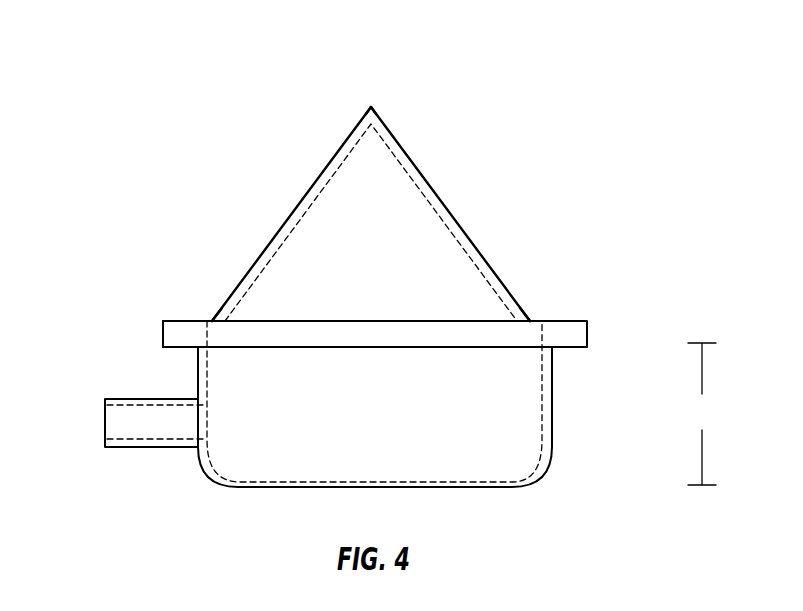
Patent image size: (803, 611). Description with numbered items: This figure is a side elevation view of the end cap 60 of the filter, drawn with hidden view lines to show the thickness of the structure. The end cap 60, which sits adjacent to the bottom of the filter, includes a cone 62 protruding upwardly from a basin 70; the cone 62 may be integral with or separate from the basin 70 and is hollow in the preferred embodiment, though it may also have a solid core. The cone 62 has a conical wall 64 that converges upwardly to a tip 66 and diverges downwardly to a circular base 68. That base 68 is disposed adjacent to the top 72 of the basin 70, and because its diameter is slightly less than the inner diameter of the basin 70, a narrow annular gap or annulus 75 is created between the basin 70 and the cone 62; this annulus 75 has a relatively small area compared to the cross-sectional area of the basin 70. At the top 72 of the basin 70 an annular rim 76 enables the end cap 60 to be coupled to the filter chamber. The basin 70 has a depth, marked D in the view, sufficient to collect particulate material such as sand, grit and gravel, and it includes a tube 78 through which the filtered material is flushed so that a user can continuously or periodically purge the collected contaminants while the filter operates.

The end cap 60 is at (128, 133).
The cone 62 is at (410, 189).
The conical wall 64 is at (292, 213).
The tip 66 is at (371, 107).
The circular base 68 is at (209, 319).
The basin 70 is at (547, 465).
The top of the basin 72 is at (388, 313).
The annulus 75 is at (207, 319).
The annular rim 76 is at (172, 321).
The tube 78 is at (153, 447).